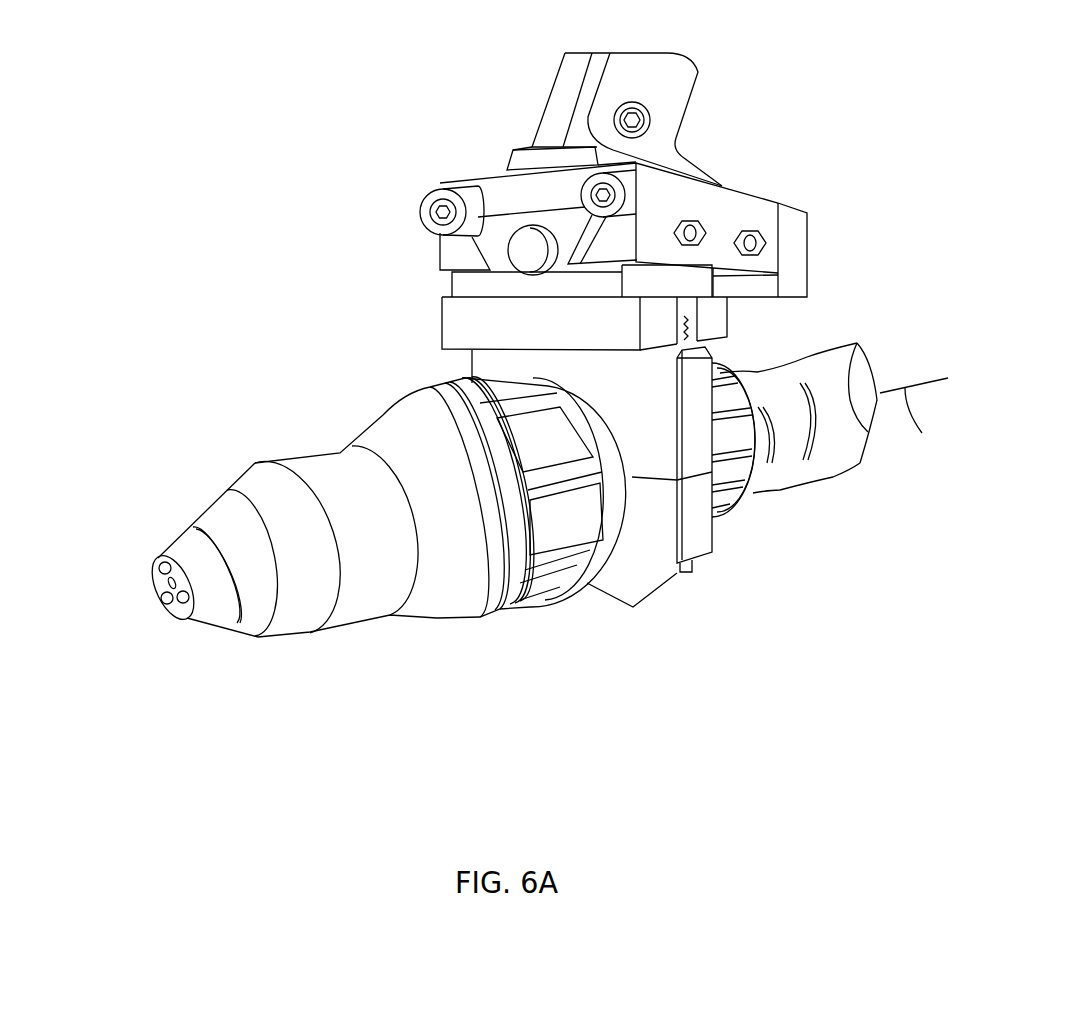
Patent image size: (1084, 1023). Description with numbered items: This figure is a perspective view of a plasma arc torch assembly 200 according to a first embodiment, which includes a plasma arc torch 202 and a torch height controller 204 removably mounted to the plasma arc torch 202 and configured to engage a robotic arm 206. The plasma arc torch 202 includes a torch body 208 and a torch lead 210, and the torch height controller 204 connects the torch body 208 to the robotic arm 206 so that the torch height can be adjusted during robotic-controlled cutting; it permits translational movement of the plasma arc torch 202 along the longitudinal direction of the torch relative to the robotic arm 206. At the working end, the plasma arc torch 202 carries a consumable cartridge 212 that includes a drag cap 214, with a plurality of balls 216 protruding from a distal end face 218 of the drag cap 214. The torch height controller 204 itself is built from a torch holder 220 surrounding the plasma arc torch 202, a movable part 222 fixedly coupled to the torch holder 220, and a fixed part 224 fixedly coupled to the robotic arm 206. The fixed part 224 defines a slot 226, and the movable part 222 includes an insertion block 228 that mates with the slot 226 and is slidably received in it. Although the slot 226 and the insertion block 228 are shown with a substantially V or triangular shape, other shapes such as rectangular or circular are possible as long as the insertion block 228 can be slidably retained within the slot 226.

The plasma arc torch assembly 200 is at (750, 66).
The plasma arc torch 202 is at (374, 403).
The torch height controller 204 is at (432, 282).
The robotic arm 206 is at (548, 90).
The torch body 208 is at (616, 516).
The torch lead 210 is at (797, 477).
The consumable cartridge 212 is at (417, 604).
The drag cap 214 is at (207, 612).
The balls 216 is at (162, 560).
The distal end face 218 is at (160, 583).
The torch holder 220 is at (662, 586).
The movable part 222 is at (432, 322).
The fixed part 224 is at (735, 192).
The slot 226 is at (483, 233).
The insertion block 228 is at (500, 247).